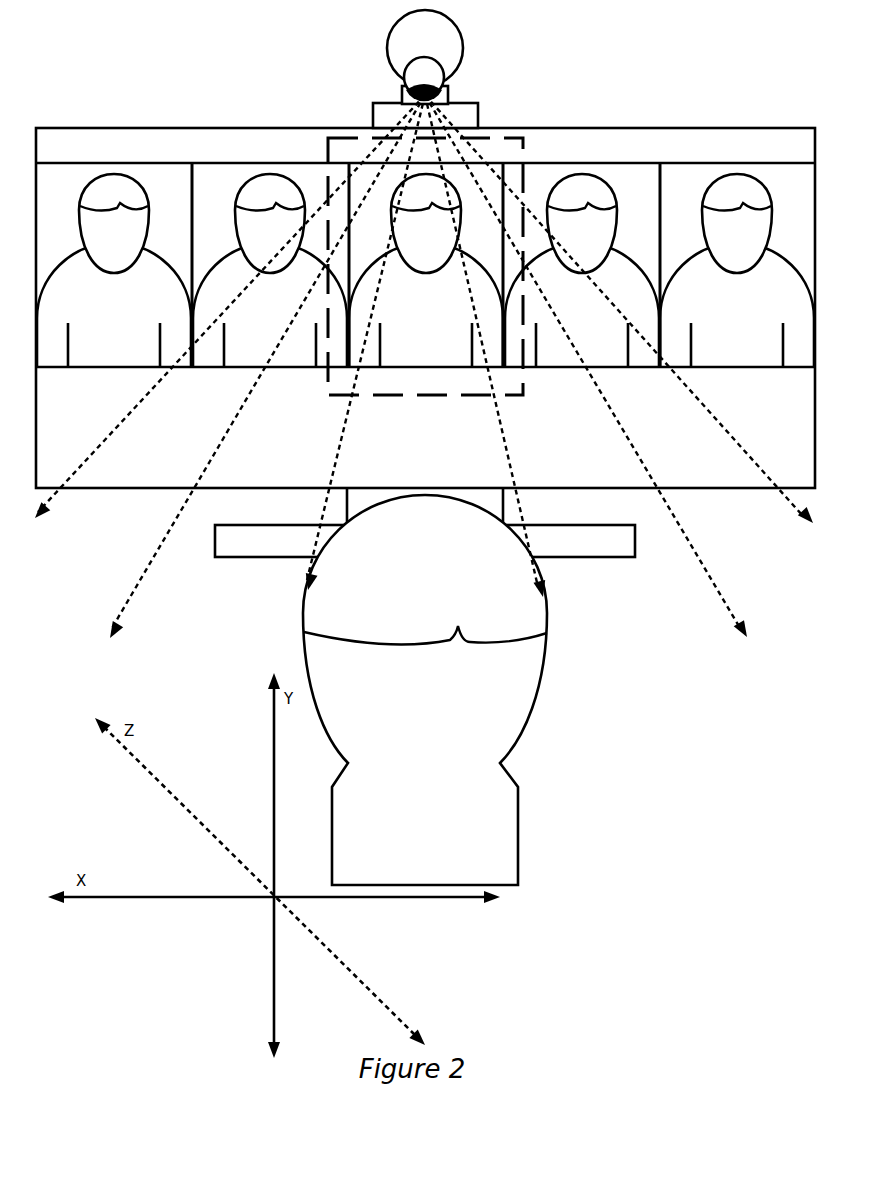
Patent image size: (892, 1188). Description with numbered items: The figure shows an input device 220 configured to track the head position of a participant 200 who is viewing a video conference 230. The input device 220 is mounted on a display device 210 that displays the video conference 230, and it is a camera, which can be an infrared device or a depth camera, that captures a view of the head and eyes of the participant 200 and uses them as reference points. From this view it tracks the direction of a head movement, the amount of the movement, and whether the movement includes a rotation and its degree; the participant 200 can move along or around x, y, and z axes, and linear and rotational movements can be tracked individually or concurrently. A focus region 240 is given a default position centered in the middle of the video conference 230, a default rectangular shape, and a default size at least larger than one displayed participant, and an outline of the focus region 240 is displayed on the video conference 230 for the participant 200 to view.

The participant 200 is at (425, 690).
The display device 210 is at (425, 342).
The input device 220 is at (425, 69).
The video conference 230 is at (646, 132).
The focus region 240 is at (338, 134).